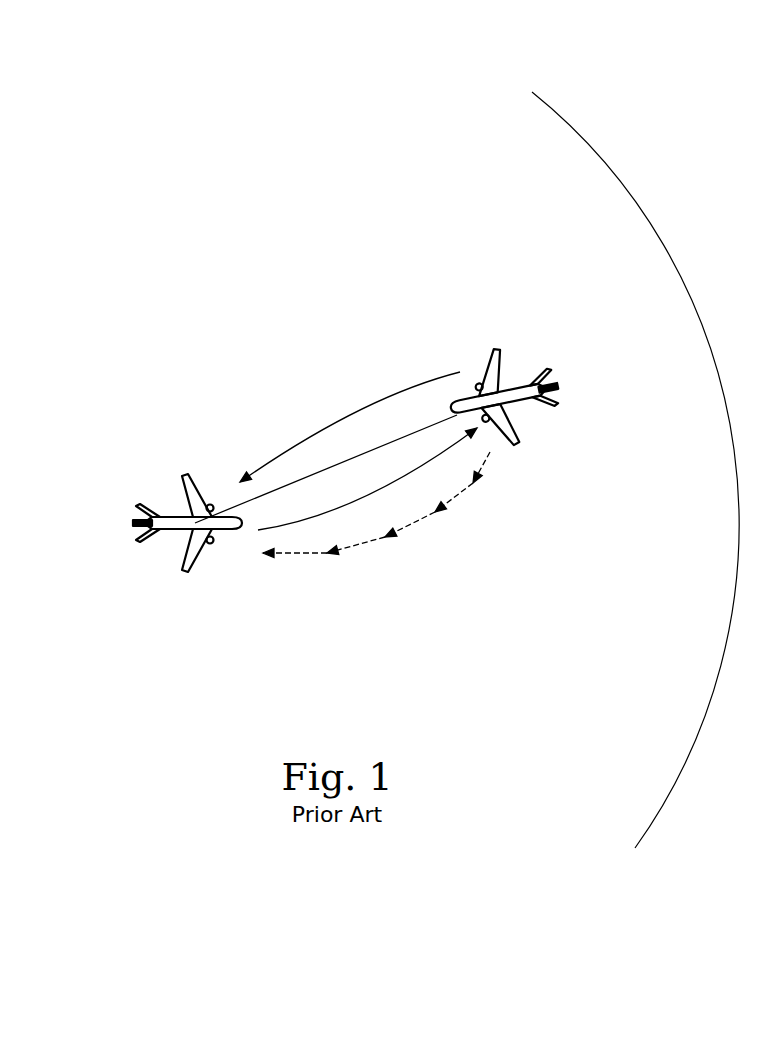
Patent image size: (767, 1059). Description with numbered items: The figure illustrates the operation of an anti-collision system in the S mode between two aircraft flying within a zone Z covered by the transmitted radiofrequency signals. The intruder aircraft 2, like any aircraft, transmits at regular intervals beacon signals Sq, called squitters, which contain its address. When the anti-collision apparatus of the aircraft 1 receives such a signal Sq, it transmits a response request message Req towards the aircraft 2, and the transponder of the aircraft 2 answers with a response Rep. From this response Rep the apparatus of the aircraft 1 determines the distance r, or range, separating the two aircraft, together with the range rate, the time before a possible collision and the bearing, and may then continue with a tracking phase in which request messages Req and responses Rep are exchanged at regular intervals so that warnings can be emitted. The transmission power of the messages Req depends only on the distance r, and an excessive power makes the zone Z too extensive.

The aircraft 1 is at (198, 493).
The intruder aircraft 2 is at (537, 385).
The zone Z is at (651, 223).
The response Rep is at (350, 427).
The distance r is at (326, 469).
The response request message Req is at (367, 479).
The beacon signal Sq is at (376, 505).